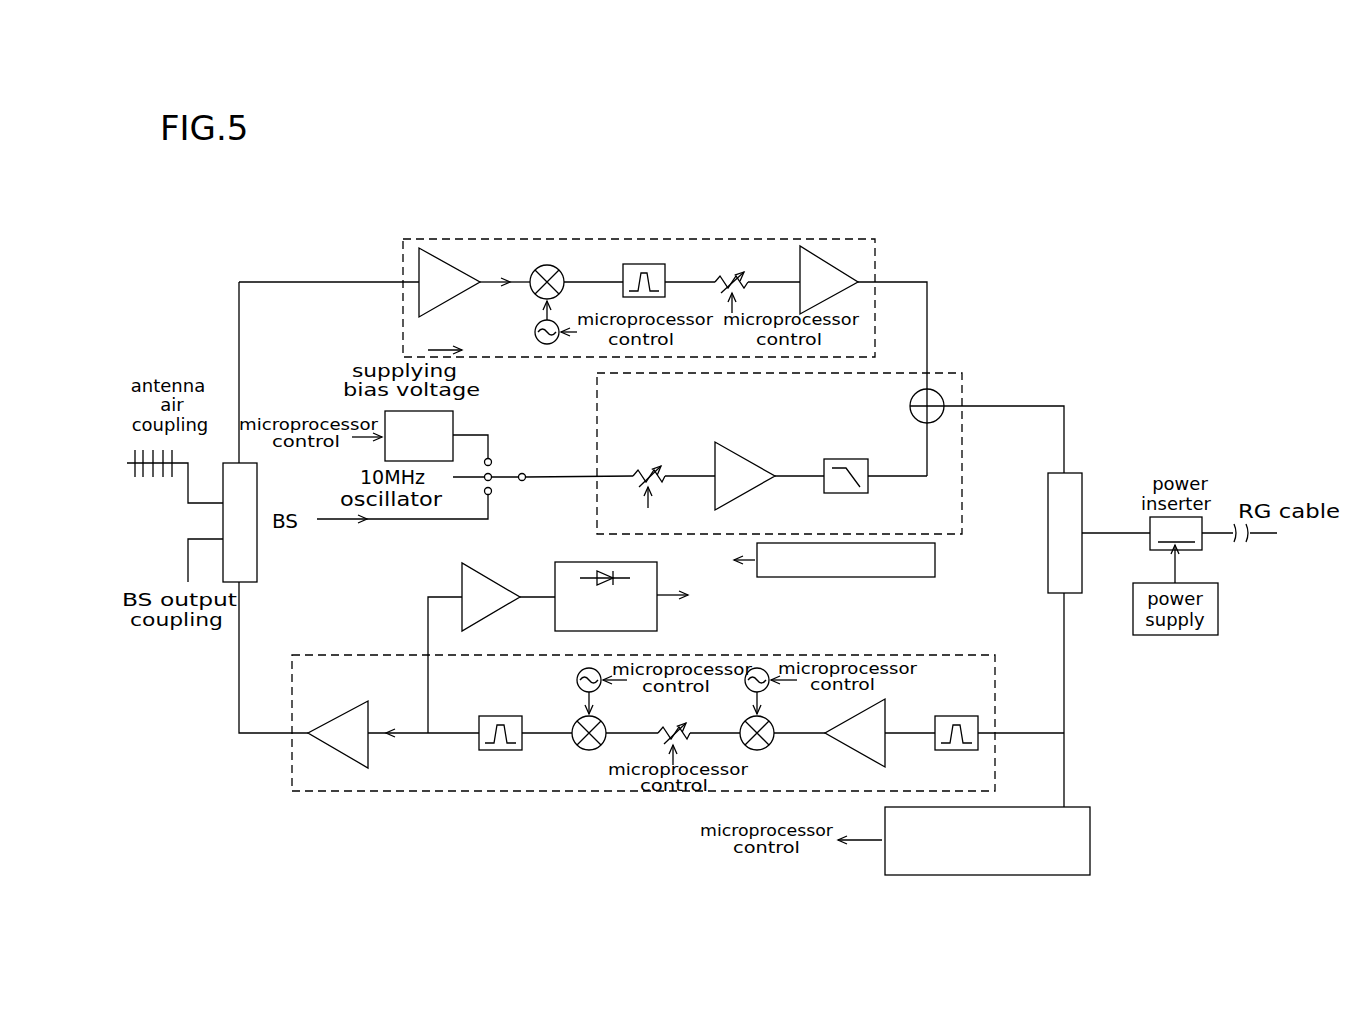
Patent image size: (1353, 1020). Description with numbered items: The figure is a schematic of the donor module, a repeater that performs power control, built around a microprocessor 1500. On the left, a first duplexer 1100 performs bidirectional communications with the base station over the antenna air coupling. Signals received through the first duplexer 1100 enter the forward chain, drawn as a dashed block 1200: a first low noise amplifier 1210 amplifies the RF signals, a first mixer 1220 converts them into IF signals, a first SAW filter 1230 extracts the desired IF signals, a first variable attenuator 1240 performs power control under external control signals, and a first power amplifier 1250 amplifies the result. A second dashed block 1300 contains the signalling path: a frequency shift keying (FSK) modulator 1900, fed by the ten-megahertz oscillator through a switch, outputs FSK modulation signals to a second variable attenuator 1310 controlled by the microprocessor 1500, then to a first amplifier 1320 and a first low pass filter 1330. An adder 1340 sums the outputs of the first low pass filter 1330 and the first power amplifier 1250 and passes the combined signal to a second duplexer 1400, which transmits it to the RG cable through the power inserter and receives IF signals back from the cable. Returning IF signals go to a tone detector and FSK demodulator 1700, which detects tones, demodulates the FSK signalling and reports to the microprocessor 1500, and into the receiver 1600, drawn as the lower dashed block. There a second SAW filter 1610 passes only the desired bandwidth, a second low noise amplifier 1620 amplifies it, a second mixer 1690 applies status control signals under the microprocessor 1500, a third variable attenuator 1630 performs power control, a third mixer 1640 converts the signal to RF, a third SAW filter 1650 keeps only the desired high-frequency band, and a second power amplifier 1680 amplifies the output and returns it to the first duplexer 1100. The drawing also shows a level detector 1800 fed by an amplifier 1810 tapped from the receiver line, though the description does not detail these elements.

The first duplexer 1100 is at (257, 563).
The forward signal processing unit 1200 is at (596, 238).
The first low noise amplifier 1210 is at (452, 260).
The first mixer 1220 is at (547, 262).
The first SAW filter 1230 is at (647, 262).
The first variable attenuator 1240 is at (727, 273).
The first power amplifier 1250 is at (830, 260).
The reverse signal processing unit 1300 is at (963, 398).
The second variable attenuator 1310 is at (640, 470).
The first amplifier 1320 is at (747, 453).
The first low pass filter 1330 is at (850, 458).
The adder 1340 is at (932, 392).
The second duplexer 1400 is at (1083, 490).
The microprocessor 1500 is at (828, 577).
The receiver 1600 is at (638, 793).
The second SAW filter 1610 is at (958, 712).
The second low noise amplifier 1620 is at (887, 700).
The third variable attenuator 1630 is at (668, 727).
The third mixer 1640 is at (587, 750).
The third SAW filter 1650 is at (498, 750).
The second power amplifier 1680 is at (338, 768).
The second mixer 1690 is at (757, 750).
The tone detector and FSK demodulator 1700 is at (883, 865).
The level detector 1800 is at (573, 562).
The amplifier 1810 is at (460, 575).
The frequency shift keying (FSK) modulator 1900 is at (453, 415).